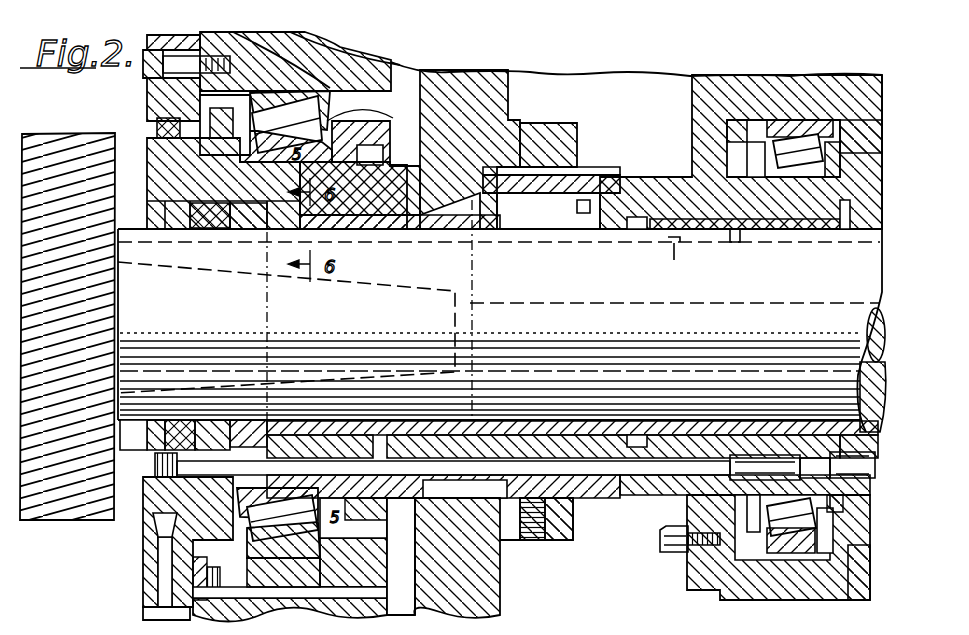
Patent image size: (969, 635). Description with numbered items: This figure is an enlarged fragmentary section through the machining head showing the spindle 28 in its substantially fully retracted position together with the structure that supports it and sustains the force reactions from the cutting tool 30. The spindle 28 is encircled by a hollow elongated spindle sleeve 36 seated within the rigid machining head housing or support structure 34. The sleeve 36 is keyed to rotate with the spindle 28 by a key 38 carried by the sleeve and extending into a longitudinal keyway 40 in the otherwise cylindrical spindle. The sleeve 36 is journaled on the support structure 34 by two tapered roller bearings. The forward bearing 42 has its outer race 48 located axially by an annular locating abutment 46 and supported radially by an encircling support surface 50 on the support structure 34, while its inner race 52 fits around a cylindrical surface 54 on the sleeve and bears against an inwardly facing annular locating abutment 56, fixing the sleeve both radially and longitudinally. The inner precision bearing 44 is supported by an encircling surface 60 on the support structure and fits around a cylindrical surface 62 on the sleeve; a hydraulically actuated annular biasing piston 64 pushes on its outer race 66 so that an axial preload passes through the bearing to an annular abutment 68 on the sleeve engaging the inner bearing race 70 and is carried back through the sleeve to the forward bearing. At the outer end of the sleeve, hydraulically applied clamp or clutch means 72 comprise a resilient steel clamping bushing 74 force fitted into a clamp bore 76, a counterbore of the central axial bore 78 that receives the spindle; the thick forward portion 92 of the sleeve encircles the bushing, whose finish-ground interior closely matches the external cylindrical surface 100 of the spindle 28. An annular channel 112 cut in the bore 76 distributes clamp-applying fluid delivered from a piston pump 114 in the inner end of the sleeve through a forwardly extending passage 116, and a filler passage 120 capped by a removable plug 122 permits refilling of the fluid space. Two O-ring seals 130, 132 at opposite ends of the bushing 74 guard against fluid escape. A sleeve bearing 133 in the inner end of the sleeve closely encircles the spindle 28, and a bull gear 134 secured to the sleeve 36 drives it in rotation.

The spindle 28 is at (614, 285).
The cutting tool 30 is at (50, 522).
The machining head housing or support structure 34 is at (215, 82).
The spindle sleeve 36 is at (641, 175).
The key 38 is at (580, 160).
The longitudinal keyway 40 is at (674, 246).
The forward bearing 42 is at (325, 83).
The inner precision bearing 44 is at (804, 153).
The annular locating abutment 46 is at (362, 63).
The outer race 48 is at (312, 64).
The encircling support surface 50 is at (246, 95).
The inner race 52 is at (375, 116).
The cylindrical surface 54 is at (248, 230).
The inwardly facing annular locating abutment 56 is at (223, 183).
The encircling surface 60 is at (743, 118).
The cylindrical surface 62 is at (777, 222).
The annular biasing piston 64 is at (748, 560).
The outer race 66 is at (797, 554).
The annular abutment 68 is at (849, 556).
The inner bearing race 70 is at (813, 222).
The clamp or clutch means 72 is at (478, 396).
The clamping bushing 74 is at (453, 232).
The clamp bore 76 is at (440, 213).
The central axial bore 78 is at (600, 432).
The forward portion of the sleeve 92 is at (434, 200).
The external cylindrical surface 100 is at (546, 432).
The annular channel 112 is at (383, 232).
The piston pump 114 is at (779, 452).
The forwardly extending bore or passage 116 is at (647, 476).
The filler passage 120 is at (236, 475).
The removable plug 122 is at (152, 466).
The O-ring seal 130 is at (278, 415).
The O-ring seal 132 is at (492, 425).
The sleeve bearing 133 is at (731, 240).
The bull gear 134 is at (480, 605).